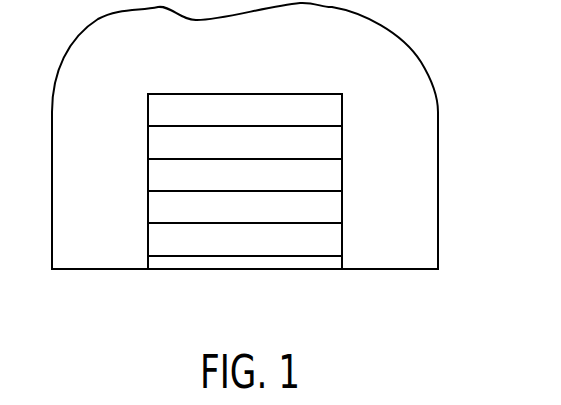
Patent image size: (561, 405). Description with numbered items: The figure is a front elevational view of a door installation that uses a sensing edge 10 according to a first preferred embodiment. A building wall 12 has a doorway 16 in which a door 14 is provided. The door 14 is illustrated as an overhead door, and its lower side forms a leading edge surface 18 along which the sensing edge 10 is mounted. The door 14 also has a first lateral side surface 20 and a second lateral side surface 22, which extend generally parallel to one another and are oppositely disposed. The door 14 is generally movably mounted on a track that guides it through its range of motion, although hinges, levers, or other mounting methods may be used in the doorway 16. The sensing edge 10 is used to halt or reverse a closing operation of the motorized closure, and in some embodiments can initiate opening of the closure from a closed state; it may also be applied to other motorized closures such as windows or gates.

The sensing edge 10 is at (288, 262).
The building wall 12 is at (427, 108).
The door 14 is at (275, 127).
The doorway 16 is at (180, 93).
The leading edge surface 18 is at (185, 257).
The first lateral side surface 20 is at (148, 182).
The second lateral side surface 22 is at (343, 176).